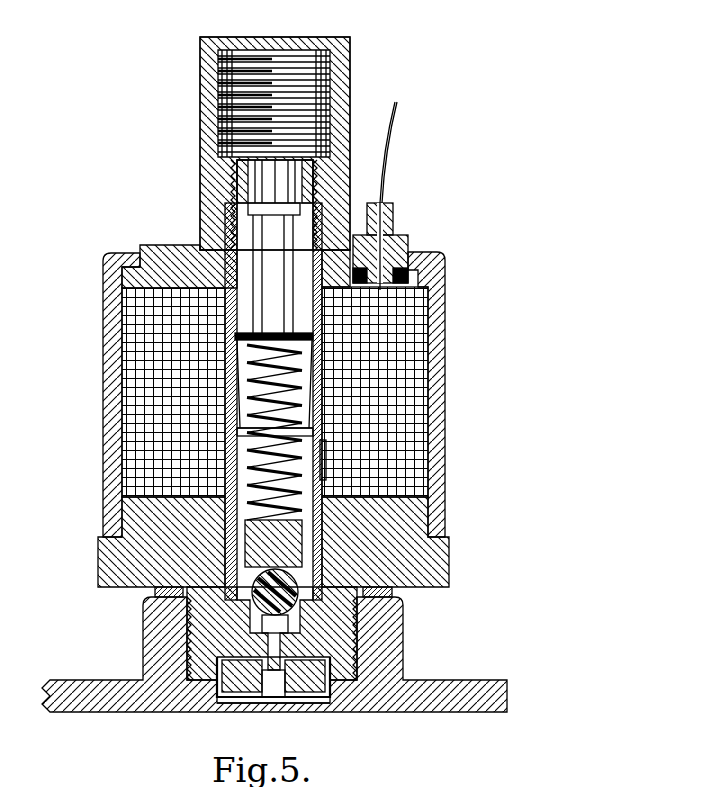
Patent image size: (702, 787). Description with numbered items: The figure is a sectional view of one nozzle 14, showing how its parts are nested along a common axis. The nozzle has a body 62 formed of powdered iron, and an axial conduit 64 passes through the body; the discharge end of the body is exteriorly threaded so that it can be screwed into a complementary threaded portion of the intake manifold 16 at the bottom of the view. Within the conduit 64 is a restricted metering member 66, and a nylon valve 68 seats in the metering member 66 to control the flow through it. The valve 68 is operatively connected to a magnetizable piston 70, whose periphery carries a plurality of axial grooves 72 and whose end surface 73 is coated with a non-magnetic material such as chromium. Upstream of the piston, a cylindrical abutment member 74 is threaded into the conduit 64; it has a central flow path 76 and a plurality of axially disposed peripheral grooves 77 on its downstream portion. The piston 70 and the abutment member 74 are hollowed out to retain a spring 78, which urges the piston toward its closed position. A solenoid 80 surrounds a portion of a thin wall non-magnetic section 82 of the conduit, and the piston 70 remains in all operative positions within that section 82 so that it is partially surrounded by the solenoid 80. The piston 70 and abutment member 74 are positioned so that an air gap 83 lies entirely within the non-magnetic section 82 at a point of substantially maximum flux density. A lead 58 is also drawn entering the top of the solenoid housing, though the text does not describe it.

The nozzle 14 is at (467, 400).
The intake manifold 16 is at (472, 670).
The electrical terminal and lead wire 58 is at (398, 110).
The body 62 is at (103, 388).
The axial conduit 64 is at (300, 107).
The restricted metering member 66 is at (303, 682).
The nylon valve 68 is at (248, 598).
The magnetizable piston 70 is at (300, 557).
The axial grooves 72 is at (308, 530).
The end surface 73 is at (312, 425).
The cylindrical abutment member 74 is at (230, 227).
The central flow path 76 is at (267, 177).
The peripheral grooves 77 is at (303, 392).
The spring 78 is at (328, 460).
The solenoid 80 is at (125, 340).
The thin wall non-magnetic section 82 is at (240, 400).
The air gap 83 is at (237, 433).